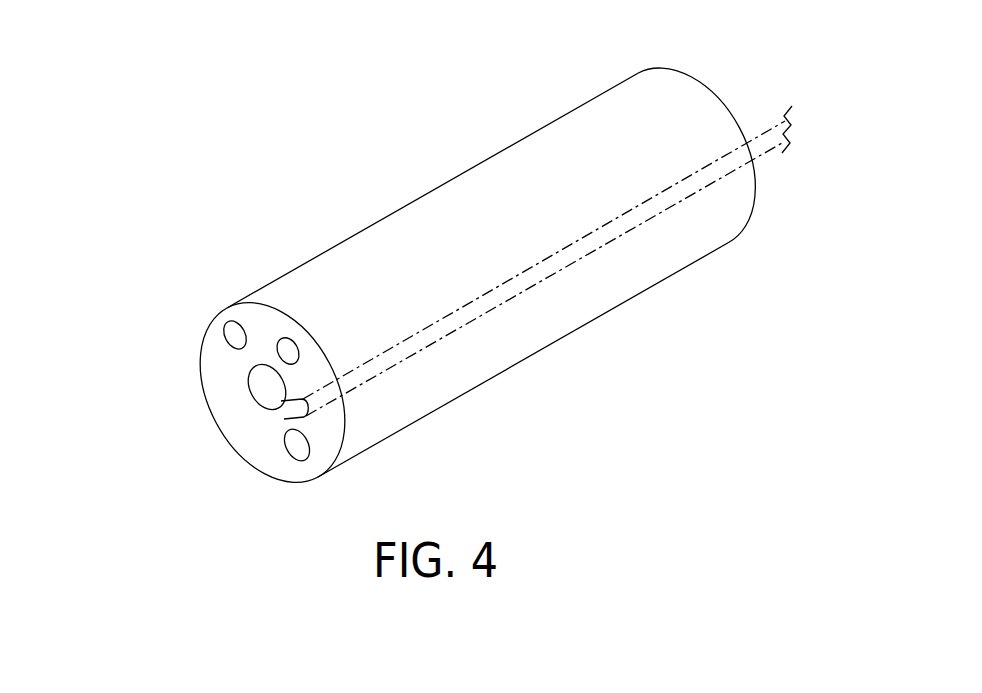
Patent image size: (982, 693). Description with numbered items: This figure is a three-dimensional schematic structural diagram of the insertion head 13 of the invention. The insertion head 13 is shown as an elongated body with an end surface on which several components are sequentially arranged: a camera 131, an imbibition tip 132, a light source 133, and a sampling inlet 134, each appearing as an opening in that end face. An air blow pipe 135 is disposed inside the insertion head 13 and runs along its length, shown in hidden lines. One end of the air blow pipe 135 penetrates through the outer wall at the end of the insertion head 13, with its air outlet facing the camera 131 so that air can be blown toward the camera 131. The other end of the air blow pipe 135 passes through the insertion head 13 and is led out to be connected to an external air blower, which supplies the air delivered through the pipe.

The insertion head 13 is at (337, 231).
The camera 131 is at (260, 373).
The imbibition tip 132 is at (233, 318).
The light source 133 is at (287, 342).
The sampling inlet 134 is at (285, 445).
The air blow pipe 135 is at (448, 318).